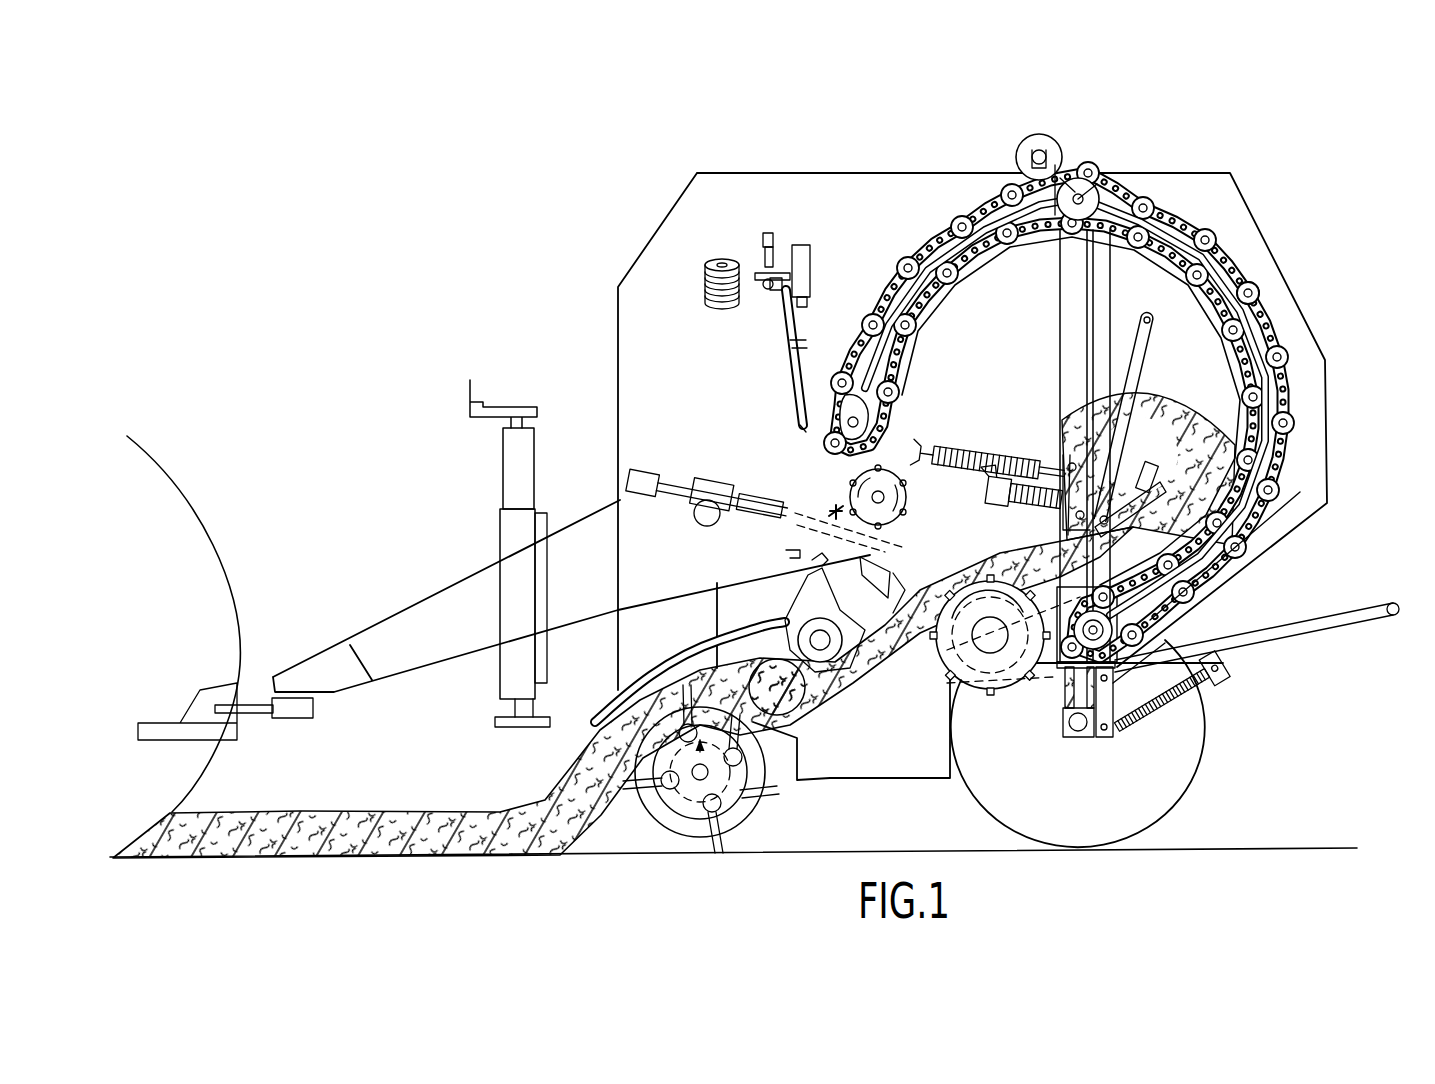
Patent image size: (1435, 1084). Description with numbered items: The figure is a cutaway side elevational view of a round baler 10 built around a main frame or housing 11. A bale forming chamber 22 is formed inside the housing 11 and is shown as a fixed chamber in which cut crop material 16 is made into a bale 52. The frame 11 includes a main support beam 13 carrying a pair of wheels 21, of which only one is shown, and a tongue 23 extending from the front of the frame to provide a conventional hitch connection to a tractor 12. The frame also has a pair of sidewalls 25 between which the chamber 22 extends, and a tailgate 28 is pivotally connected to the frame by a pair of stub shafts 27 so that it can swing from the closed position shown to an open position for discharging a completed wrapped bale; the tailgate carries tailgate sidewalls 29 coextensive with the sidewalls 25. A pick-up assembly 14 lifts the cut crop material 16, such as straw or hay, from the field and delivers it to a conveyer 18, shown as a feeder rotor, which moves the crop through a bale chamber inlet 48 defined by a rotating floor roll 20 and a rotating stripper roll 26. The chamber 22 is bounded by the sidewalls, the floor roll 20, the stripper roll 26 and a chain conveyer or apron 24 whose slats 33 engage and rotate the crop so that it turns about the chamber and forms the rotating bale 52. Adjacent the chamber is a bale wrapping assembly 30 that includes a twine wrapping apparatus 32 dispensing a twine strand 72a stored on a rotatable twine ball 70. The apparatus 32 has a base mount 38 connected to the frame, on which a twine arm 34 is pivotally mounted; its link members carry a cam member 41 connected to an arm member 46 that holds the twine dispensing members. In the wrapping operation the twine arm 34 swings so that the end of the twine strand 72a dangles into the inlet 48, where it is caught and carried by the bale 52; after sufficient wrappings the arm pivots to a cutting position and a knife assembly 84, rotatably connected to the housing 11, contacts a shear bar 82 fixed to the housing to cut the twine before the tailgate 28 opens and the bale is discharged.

The round baler 10 is at (545, 268).
The main frame or housing 11 is at (795, 168).
The tractor 12 is at (158, 425).
The main support beam 13 is at (1060, 697).
The pick-up assembly 14 is at (675, 828).
The cut crop material 16 is at (343, 807).
The conveyer 18 is at (803, 620).
The floor roll 20 is at (933, 660).
The wheels 21 is at (1200, 763).
The bale forming chamber 22 is at (978, 336).
The tongue 23 is at (427, 645).
The chain conveyer (apron) 24 is at (1200, 310).
The sidewalls 25 is at (850, 211).
The stripper roll 26 is at (907, 508).
The stub shafts 27 is at (1090, 175).
The tailgate 28 is at (1263, 558).
The tailgate sidewalls 29 is at (1190, 208).
The bale wrapping assembly 30 is at (780, 427).
The twine wrapping apparatus 32 is at (755, 238).
The slats 33 is at (1248, 293).
The twine arm 34 is at (630, 522).
The base mount 38 is at (630, 498).
The cam member 41 is at (715, 490).
The arm member 46 is at (765, 510).
The bale chamber inlet 48 is at (950, 550).
The bale 52 is at (1217, 443).
The twine ball 70 is at (720, 262).
The twine strand 72a is at (727, 530).
The shear bar (striker plate) 82 is at (877, 553).
The knife assembly 84 is at (827, 503).